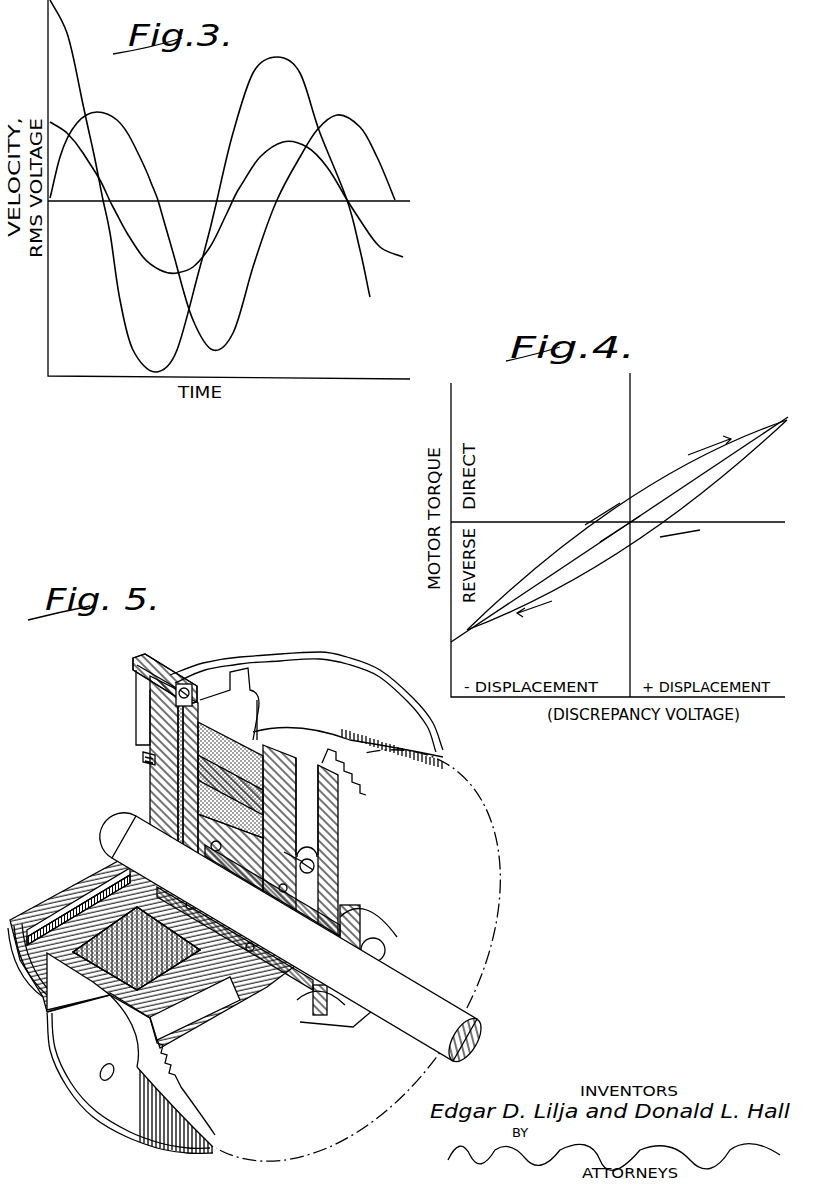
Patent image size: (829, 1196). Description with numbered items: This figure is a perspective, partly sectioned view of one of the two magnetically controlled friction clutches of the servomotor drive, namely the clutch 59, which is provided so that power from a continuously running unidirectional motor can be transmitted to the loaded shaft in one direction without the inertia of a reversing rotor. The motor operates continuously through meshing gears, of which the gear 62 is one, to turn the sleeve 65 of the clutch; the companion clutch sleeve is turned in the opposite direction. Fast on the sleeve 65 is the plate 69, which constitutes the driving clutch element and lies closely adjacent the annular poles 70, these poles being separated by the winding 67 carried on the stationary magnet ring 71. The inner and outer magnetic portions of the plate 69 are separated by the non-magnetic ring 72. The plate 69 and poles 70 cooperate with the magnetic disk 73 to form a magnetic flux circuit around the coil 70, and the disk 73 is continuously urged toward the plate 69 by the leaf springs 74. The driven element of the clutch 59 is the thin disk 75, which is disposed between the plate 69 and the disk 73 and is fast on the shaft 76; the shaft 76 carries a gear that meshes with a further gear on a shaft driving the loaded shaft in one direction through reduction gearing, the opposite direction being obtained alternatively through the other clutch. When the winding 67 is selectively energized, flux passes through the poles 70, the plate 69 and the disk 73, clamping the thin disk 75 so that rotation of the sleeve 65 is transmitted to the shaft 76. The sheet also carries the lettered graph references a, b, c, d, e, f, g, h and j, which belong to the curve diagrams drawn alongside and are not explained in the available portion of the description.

In FIG. 3, the load velocity curve a is at (150, 255).
In FIG. 3, the motor output voltage curve b is at (81, 92).
In FIG. 3, the discrepancy voltage curve c is at (145, 168).
In FIG. 4, the torque displacement line d is at (700, 470).
In FIG. 4, the upper hysteresis curve point e is at (667, 475).
In FIG. 4, the lower hysteresis curve point f is at (645, 541).
In FIG. 4, the lower curve crossing point g is at (675, 526).
In FIG. 4, the lower curve origin point h is at (622, 531).
In FIG. 4, the upper curve crossing point j is at (600, 520).
In FIG. 5, the friction clutch 59 is at (244, 645).
In FIG. 5, the meshing gear 62 is at (480, 845).
In FIG. 5, the sleeve 65 is at (300, 963).
In FIG. 5, the winding 67 is at (263, 793).
In FIG. 5, the plate 69 is at (190, 692).
In FIG. 5, the annular poles 70 is at (220, 795).
In FIG. 5, the stationary magnet ring 71 is at (287, 823).
In FIG. 5, the non-magnetic ring 72 is at (181, 786).
In FIG. 5, the magnetic disk 73 is at (165, 715).
In FIG. 5, the leaf springs 74 is at (140, 698).
In FIG. 5, the thin disk 75 is at (150, 763).
In FIG. 5, the shaft 76 is at (118, 816).